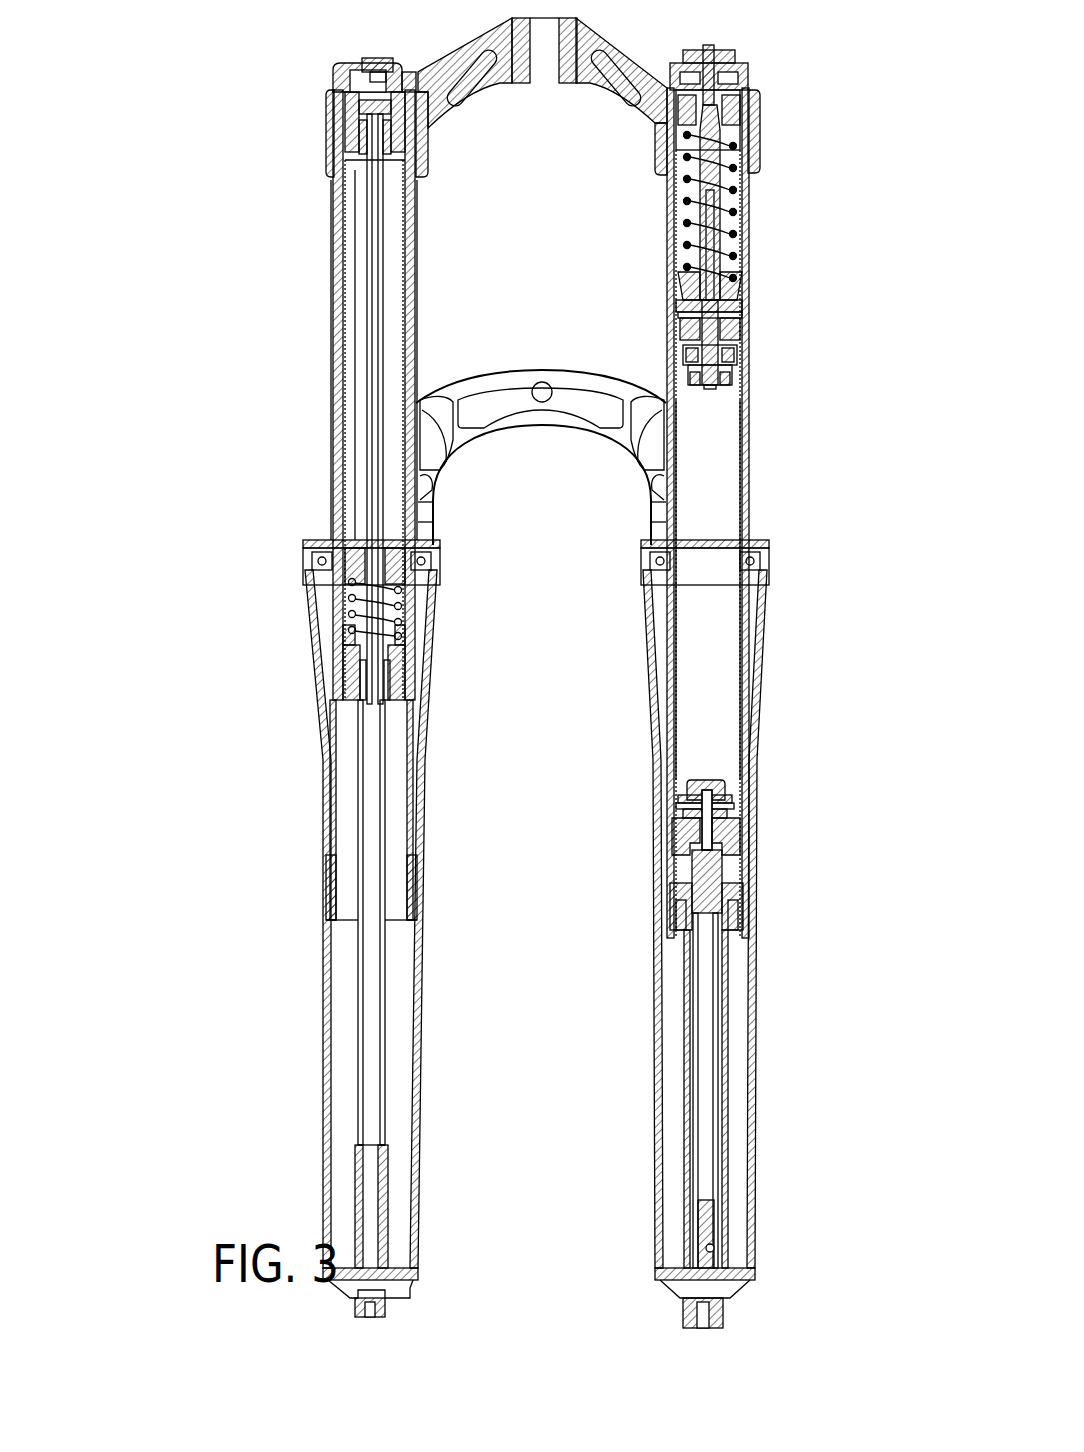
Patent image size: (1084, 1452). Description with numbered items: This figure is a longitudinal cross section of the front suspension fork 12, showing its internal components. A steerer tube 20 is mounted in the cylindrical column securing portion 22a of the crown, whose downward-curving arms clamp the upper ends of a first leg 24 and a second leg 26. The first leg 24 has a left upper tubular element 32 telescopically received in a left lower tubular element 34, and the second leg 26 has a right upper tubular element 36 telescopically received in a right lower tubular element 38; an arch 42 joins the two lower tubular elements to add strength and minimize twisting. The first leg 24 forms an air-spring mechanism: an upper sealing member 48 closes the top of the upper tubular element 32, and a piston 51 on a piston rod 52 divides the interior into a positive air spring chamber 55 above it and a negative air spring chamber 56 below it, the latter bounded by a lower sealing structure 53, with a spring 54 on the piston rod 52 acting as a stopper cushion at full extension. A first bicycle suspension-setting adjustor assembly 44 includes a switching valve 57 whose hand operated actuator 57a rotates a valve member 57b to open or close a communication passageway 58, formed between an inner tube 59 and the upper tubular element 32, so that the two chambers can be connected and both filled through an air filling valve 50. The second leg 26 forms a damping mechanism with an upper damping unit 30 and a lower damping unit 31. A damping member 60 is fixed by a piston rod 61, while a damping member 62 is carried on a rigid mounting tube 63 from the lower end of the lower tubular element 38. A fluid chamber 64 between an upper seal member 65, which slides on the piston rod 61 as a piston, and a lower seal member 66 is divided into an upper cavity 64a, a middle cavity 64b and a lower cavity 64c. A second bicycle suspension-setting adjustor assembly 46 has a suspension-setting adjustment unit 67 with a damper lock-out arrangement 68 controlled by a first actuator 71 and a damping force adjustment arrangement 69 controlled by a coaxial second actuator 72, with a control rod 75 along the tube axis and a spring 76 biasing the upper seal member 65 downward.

The front suspension fork 12 is at (312, 280).
The steerer tube 20 is at (568, 20).
The column securing portion 22a is at (583, 28).
The first leg 24 is at (219, 513).
The second leg 26 is at (856, 513).
The upper damping unit 30 is at (722, 392).
The lower damping unit 31 is at (722, 772).
The left upper tubular element 32 is at (333, 490).
The left lower tubular element 34 is at (318, 618).
The right upper tubular element 36 is at (750, 490).
The right lower tubular element 38 is at (757, 625).
The arch 42 is at (540, 368).
The first bicycle suspension-setting adjustor assembly 44 is at (338, 65).
The second bicycle suspension-setting adjustor assembly 46 is at (755, 80).
The upper sealing member 48 is at (345, 118).
The air filling valve 50 is at (377, 58).
The piston 51 is at (405, 568).
The piston rod 52 is at (385, 766).
The lower sealing structure 53 is at (390, 690).
The spring 54 is at (405, 618).
The positive air spring chamber 55 is at (357, 372).
The negative air spring chamber 56 is at (355, 628).
The switching valve 57 is at (408, 62).
The hand operated actuator 57a is at (345, 92).
The valve member 57b is at (390, 138).
The communication passageway 58 is at (418, 320).
The inner tube 59 is at (345, 402).
The damping member 60 is at (722, 390).
The piston rod 61 is at (718, 195).
The damping member 62 is at (745, 870).
The rigid mounting tube 63 is at (745, 1062).
The fluid chamber 64 is at (700, 740).
The upper cavity 64a is at (680, 345).
The middle cavity 64b is at (695, 510).
The lower cavity 64c is at (680, 862).
The upper seal member 65 is at (672, 272).
The lower seal member 66 is at (745, 960).
The suspension-setting adjustment unit 67 is at (846, 275).
The damper lock-out arrangement 68 is at (740, 302).
The damping force adjustment arrangement 69 is at (735, 342).
The first actuator 71 is at (712, 52).
The second actuator 72 is at (730, 60).
The control rod 75 is at (724, 225).
The spring 76 is at (735, 215).